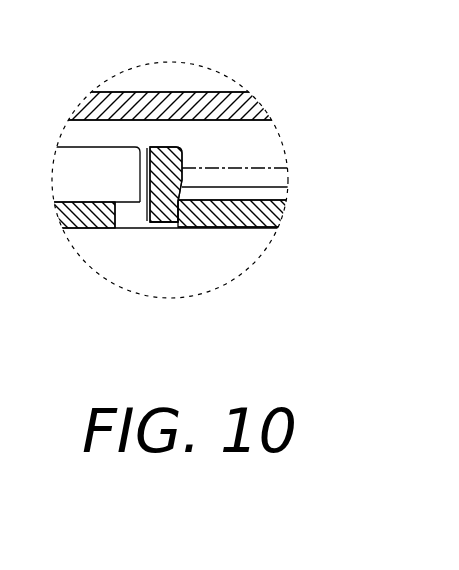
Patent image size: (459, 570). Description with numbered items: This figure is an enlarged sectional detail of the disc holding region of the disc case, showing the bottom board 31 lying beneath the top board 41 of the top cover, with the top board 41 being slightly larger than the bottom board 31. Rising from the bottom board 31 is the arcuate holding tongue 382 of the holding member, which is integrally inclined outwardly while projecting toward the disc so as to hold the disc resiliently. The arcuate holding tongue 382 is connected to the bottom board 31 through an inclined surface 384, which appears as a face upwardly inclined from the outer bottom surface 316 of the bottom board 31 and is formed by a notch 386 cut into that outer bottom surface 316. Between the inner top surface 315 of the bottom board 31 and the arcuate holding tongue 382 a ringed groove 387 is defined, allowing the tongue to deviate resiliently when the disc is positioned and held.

The top board 41 is at (242, 91).
The arcuate holding tongue 382 is at (182, 178).
The inner top surface 315 is at (262, 200).
The bottom board 31 is at (282, 211).
The outer bottom surface 316 is at (233, 228).
The ringed groove 387 is at (184, 228).
The inclined surface 384 is at (155, 228).
The notch 386 is at (133, 229).